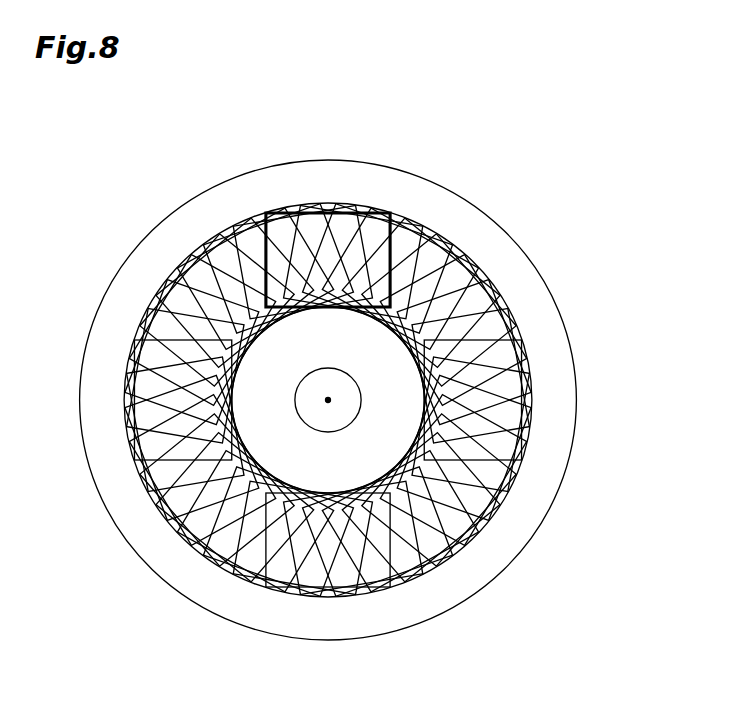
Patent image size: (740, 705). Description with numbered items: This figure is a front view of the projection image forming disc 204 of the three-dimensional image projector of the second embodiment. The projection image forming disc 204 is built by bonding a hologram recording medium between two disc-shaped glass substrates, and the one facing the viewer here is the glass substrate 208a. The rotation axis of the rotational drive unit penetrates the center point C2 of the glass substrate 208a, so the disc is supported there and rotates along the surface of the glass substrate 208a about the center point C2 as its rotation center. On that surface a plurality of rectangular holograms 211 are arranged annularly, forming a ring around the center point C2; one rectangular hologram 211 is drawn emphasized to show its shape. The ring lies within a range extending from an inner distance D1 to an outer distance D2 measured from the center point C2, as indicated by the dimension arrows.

The projection image forming disc 204 is at (511, 237).
The glass substrate 208a is at (557, 394).
The rectangular hologram 211 is at (348, 228).
The center point C2 is at (328, 400).
The distance D1 is at (328, 307).
The distance D2 is at (312, 214).